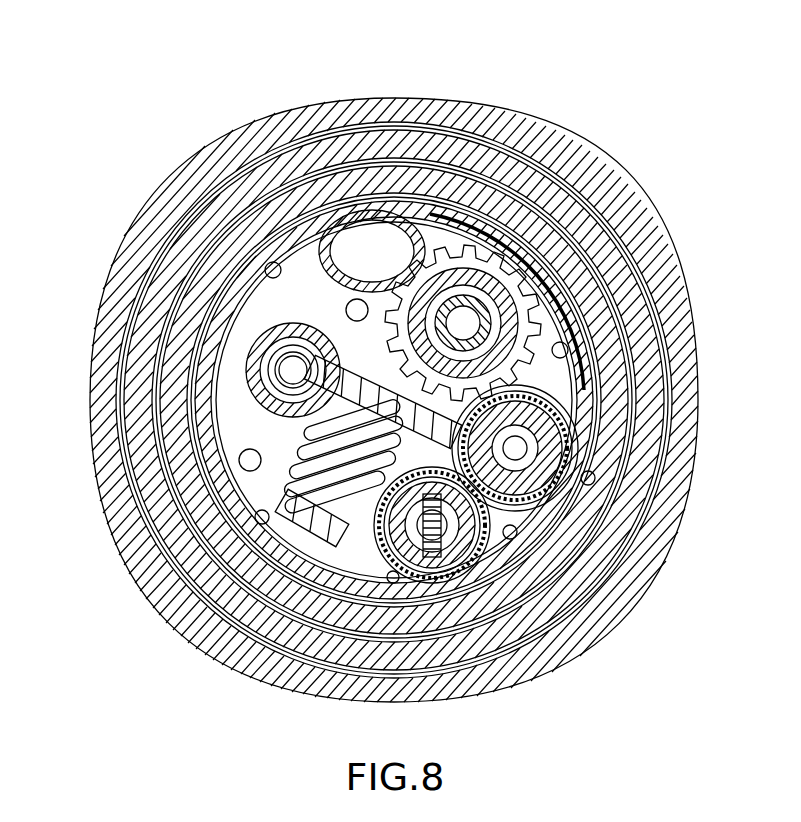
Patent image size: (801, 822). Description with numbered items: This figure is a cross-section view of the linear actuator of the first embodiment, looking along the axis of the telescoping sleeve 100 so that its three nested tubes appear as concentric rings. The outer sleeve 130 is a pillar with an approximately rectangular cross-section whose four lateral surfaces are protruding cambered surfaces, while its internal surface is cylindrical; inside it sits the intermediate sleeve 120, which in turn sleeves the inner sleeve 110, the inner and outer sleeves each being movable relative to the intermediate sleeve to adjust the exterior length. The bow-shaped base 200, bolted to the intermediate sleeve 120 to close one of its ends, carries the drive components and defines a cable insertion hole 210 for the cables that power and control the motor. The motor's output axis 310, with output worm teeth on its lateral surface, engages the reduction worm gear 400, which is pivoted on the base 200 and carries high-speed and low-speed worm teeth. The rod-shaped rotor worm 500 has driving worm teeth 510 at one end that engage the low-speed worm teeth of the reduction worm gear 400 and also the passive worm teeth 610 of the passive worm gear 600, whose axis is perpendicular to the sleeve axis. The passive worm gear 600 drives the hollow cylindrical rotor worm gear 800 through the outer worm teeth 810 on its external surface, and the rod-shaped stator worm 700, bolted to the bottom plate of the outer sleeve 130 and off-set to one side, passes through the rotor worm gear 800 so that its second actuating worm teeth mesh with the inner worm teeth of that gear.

The telescoping sleeve 100 is at (394, 362).
The inner sleeve 110 is at (373, 167).
The intermediate sleeve 120 is at (310, 190).
The outer sleeve 130 is at (210, 155).
The base 200 is at (413, 210).
The cable insertion hole 210 is at (378, 197).
The output axis 310 is at (285, 370).
The reduction worm gear 400 is at (315, 468).
The rotor worm 500 is at (532, 589).
The driving worm teeth 510 is at (450, 572).
The passive worm gear 600 is at (545, 428).
The passive worm teeth 610 is at (555, 392).
The stator worm 700 is at (462, 320).
The rotor worm gear 800 is at (540, 254).
The outer worm teeth 810 is at (533, 300).